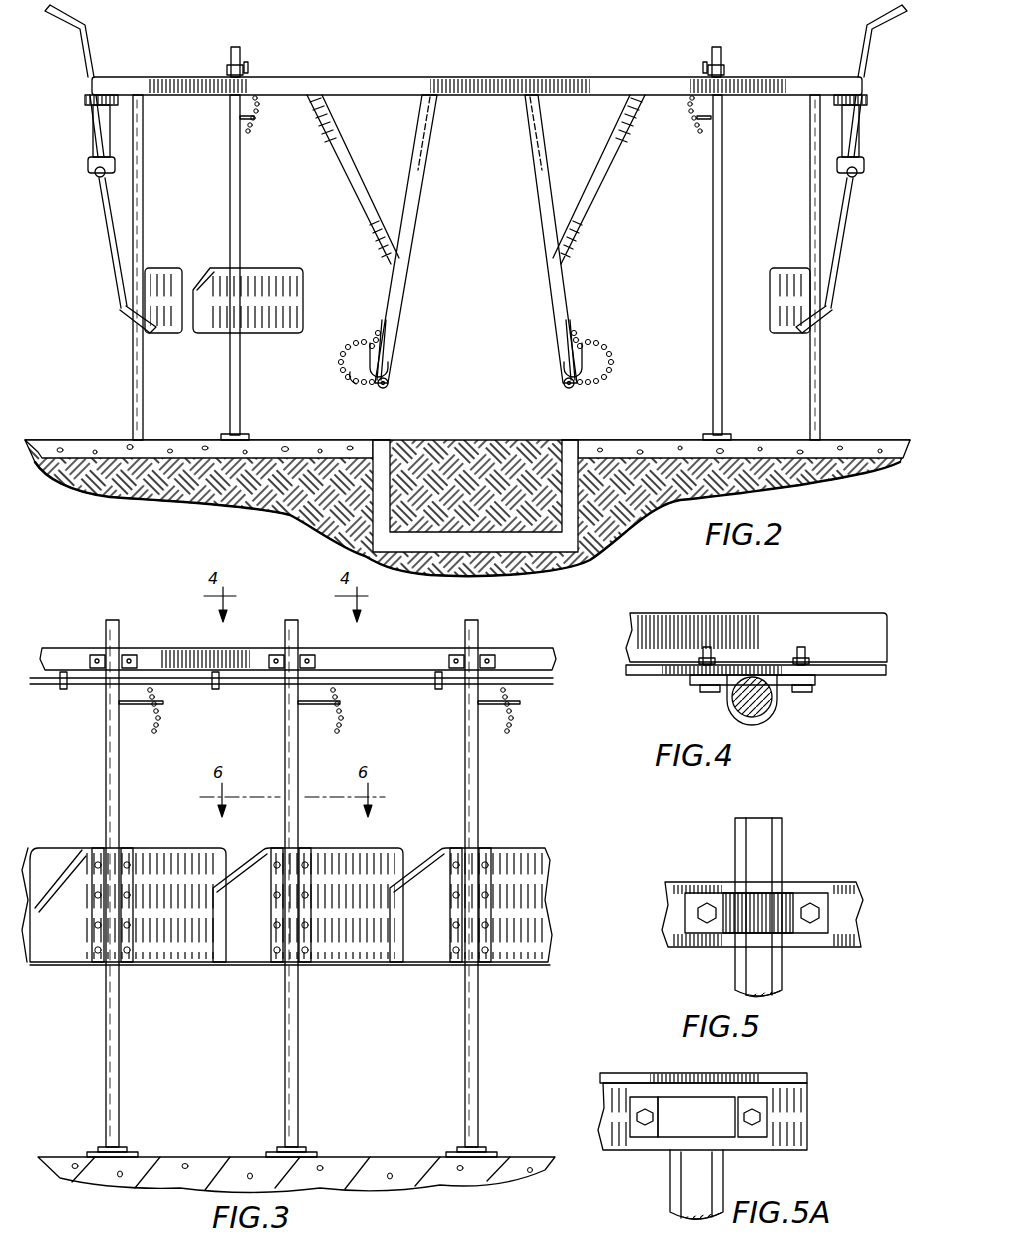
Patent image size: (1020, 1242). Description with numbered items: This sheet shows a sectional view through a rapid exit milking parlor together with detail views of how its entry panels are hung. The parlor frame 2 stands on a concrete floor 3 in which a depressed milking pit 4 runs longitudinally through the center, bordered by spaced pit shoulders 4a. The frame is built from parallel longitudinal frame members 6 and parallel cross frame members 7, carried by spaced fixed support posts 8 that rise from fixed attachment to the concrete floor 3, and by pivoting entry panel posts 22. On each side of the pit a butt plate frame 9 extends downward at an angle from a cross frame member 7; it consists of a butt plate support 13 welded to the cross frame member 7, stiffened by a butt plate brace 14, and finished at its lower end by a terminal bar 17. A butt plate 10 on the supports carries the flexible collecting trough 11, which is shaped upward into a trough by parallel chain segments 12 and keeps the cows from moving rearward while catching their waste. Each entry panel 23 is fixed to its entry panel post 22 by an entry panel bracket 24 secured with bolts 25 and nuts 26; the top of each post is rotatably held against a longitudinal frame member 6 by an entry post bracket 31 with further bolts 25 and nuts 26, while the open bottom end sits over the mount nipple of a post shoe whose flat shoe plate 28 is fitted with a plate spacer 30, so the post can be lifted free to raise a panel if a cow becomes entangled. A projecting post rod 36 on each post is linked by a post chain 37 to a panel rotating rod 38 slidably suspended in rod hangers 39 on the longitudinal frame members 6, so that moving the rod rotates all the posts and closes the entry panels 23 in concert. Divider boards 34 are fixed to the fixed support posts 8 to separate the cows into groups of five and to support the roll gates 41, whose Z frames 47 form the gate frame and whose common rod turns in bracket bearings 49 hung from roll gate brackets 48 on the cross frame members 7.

In FIG. 2, the parlor frame 2 is at (477, 69).
In FIG. 3, the parlor frame 2 is at (298, 640).
In FIG. 4, the parlor frame 2 is at (833, 640).
In FIG. 5, the parlor frame 2 is at (710, 880).
In FIG. 5A, the parlor frame 2 is at (702, 1116).
In FIG. 2, the concrete floor 3 is at (175, 440).
In FIG. 3, the concrete floor 3 is at (370, 1158).
In FIG. 2, the milking pit 4 is at (430, 482).
In FIG. 2, the pit shoulders 4a is at (385, 440).
In FIG. 3, the longitudinal frame member 6 is at (410, 667).
In FIG. 5A, the longitudinal frame member 6 is at (640, 1082).
In FIG. 2, the cross frame member 7 is at (604, 78).
In FIG. 2, the fixed support post 8 is at (133, 382).
In FIG. 2, the butt plate frame 9 is at (476, 239).
In FIG. 2, the butt plate 10 is at (354, 384).
In FIG. 2, the collecting trough 11 is at (358, 345).
In FIG. 2, the chain segments 12 is at (380, 325).
In FIG. 2, the butt plate support 13 is at (405, 262).
In FIG. 2, the butt plate brace 14 is at (345, 152).
In FIG. 2, the terminal bar 17 is at (385, 390).
In FIG. 2, the entry panel post 22 is at (241, 200).
In FIG. 3, the entry panel post 22 is at (478, 790).
In FIG. 4, the entry panel post 22 is at (745, 707).
In FIG. 5, the entry panel post 22 is at (784, 862).
In FIG. 5A, the entry panel post 22 is at (724, 1168).
In FIG. 2, the entry panel 23 is at (275, 280).
In FIG. 3, the entry panel 23 is at (45, 858).
In FIG. 3, the entry panel bracket 24 is at (305, 965).
In FIG. 3, the bolts 25 is at (133, 660).
In FIG. 4, the bolts 25 is at (812, 693).
In FIG. 5, the bolts 25 is at (812, 938).
In FIG. 5A, the bolts 25 is at (768, 1108).
In FIG. 4, the nuts 26 is at (735, 668).
In FIG. 3, the shoe plate 28 is at (95, 1150).
In FIG. 2, the plate spacer 30 is at (248, 436).
In FIG. 3, the plate spacer 30 is at (128, 1149).
In FIG. 2, the entry post bracket 31 is at (230, 70).
In FIG. 3, the entry post bracket 31 is at (107, 648).
In FIG. 4, the entry post bracket 31 is at (778, 706).
In FIG. 5, the entry post bracket 31 is at (725, 935).
In FIG. 5A, the entry post bracket 31 is at (712, 1128).
In FIG. 2, the divider board 34 is at (170, 280).
In FIG. 2, the post rod 36 is at (256, 140).
In FIG. 3, the post rod 36 is at (140, 707).
In FIG. 2, the post chain 37 is at (262, 118).
In FIG. 3, the post chain 37 is at (162, 720).
In FIG. 3, the panel rotating rod 38 is at (268, 687).
In FIG. 3, the rod hangers 39 is at (62, 690).
In FIG. 2, the roll gate 41 is at (880, 88).
In FIG. 2, the Z frames 47 is at (108, 247).
In FIG. 2, the roll gate bracket 48 is at (98, 148).
In FIG. 2, the bracket bearing 49 is at (94, 172).